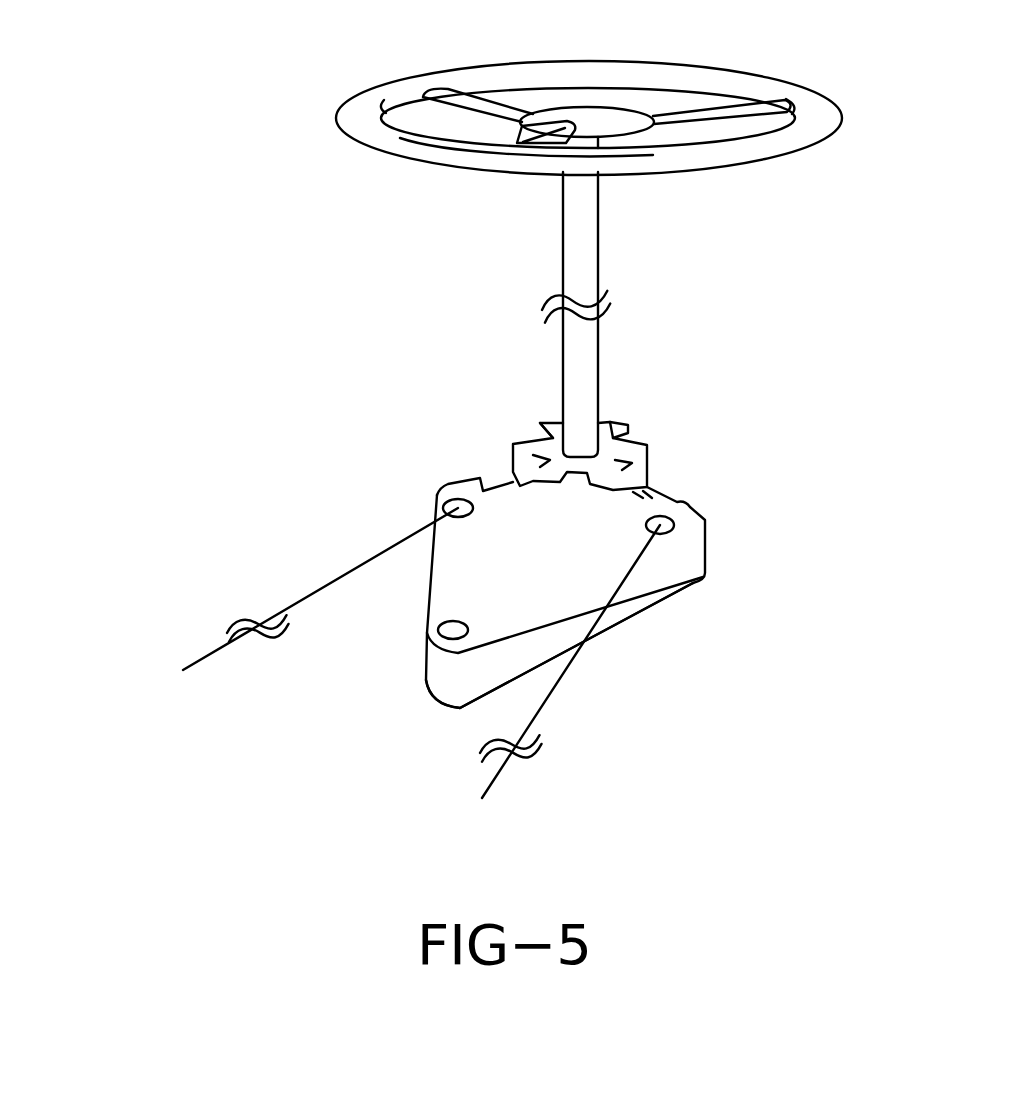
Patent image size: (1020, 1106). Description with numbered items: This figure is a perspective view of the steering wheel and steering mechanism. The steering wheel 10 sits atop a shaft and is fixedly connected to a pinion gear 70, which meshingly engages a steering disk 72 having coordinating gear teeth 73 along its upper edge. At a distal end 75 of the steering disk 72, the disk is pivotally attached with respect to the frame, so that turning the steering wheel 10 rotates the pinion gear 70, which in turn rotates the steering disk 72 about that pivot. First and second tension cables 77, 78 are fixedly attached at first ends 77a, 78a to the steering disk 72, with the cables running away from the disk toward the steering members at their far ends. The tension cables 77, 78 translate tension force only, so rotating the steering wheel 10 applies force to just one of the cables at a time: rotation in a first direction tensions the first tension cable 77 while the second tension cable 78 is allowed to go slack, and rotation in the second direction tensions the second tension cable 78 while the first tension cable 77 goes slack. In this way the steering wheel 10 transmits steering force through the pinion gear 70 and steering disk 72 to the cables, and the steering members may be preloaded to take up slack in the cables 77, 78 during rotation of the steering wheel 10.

The steering wheel 10 is at (662, 105).
The pinion gear 70 is at (648, 447).
The steering disk 72 is at (642, 481).
The coordinating gear teeth 73 is at (700, 505).
The distal end 75 is at (498, 702).
The first tension cable 77 is at (329, 578).
The first end of first tension cable 77a is at (432, 502).
The second tension cable 78 is at (574, 668).
The first end of second tension cable 78a is at (703, 528).